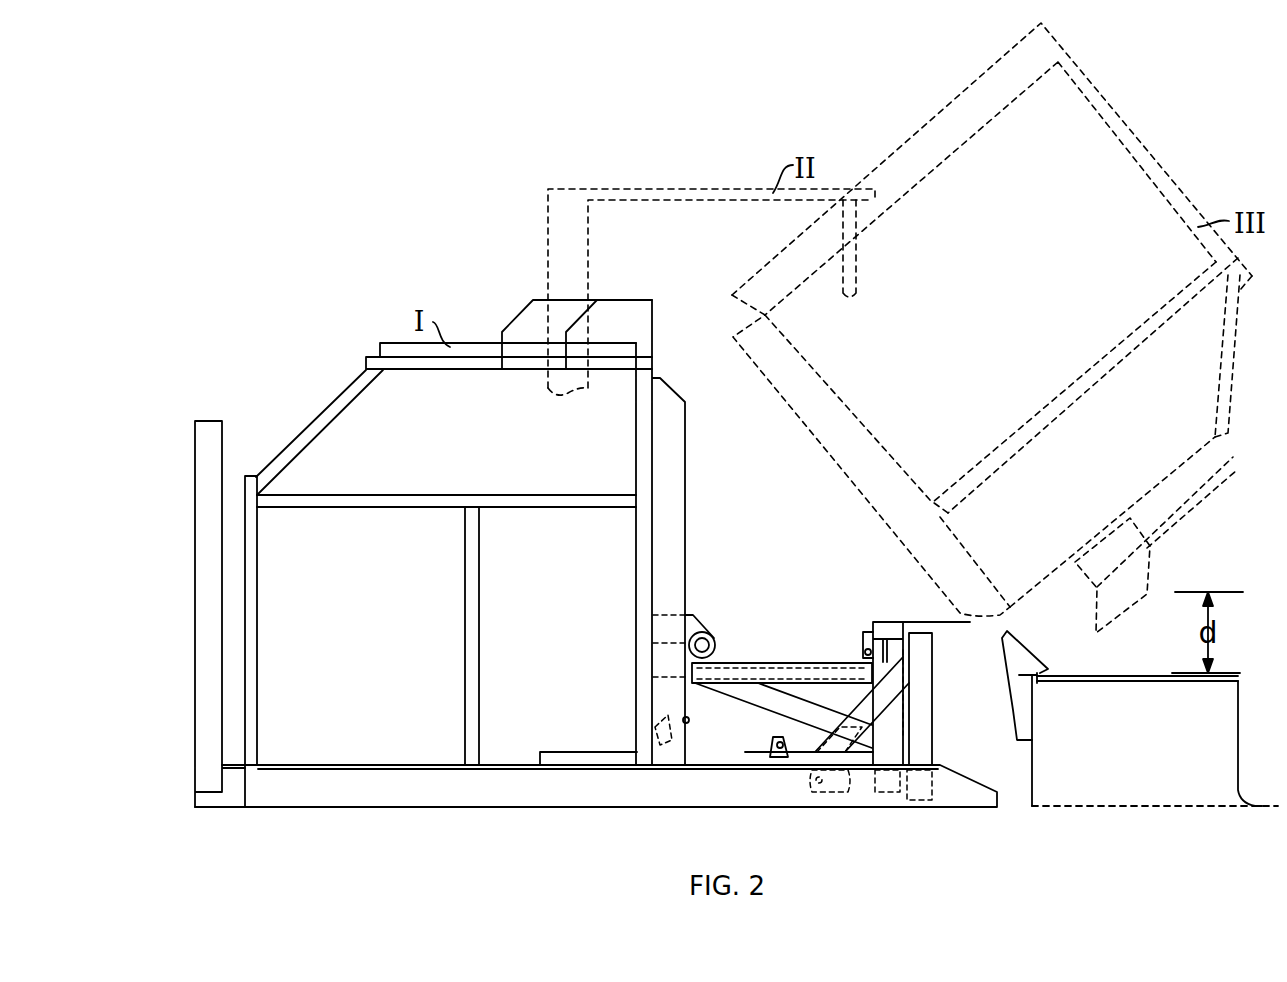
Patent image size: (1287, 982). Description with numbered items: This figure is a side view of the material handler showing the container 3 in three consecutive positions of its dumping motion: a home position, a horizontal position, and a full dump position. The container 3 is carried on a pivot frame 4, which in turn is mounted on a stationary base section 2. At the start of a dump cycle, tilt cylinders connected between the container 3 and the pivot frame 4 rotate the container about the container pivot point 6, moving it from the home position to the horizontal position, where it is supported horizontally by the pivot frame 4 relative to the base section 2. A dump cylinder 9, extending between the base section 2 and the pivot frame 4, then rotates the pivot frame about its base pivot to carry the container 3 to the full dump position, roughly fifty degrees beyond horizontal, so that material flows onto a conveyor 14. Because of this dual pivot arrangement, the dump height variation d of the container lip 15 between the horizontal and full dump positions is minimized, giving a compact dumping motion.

The base section 2 is at (388, 799).
The container 3 is at (322, 420).
The pivot frame 4 is at (772, 727).
The container pivot point 6 is at (700, 655).
The dump cylinder 9 is at (846, 672).
The conveyor 14 is at (1212, 683).
The container lip 15 is at (1083, 562).